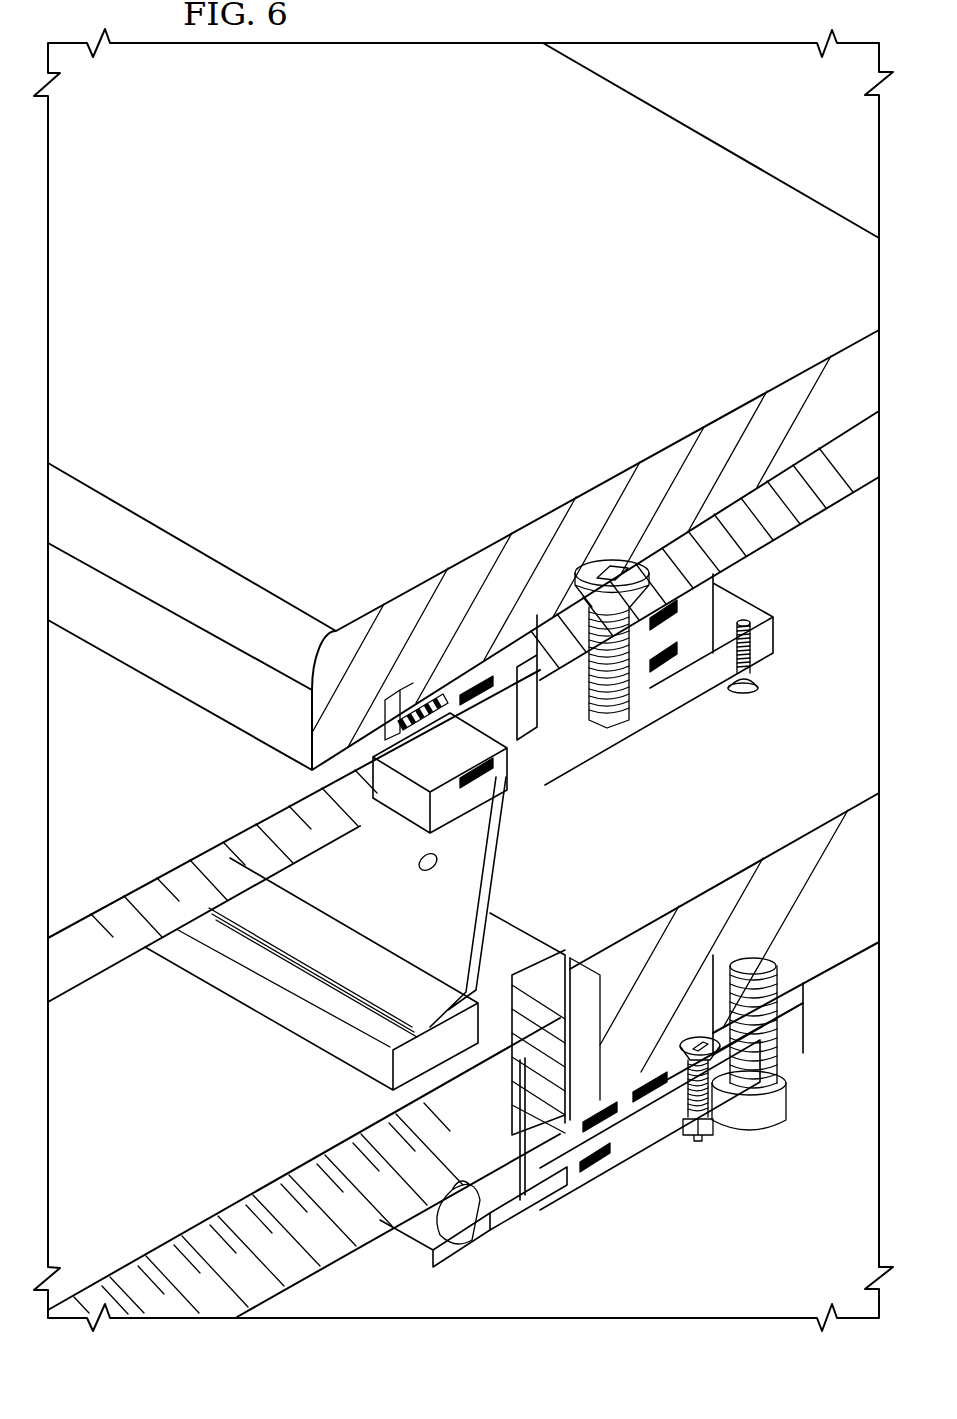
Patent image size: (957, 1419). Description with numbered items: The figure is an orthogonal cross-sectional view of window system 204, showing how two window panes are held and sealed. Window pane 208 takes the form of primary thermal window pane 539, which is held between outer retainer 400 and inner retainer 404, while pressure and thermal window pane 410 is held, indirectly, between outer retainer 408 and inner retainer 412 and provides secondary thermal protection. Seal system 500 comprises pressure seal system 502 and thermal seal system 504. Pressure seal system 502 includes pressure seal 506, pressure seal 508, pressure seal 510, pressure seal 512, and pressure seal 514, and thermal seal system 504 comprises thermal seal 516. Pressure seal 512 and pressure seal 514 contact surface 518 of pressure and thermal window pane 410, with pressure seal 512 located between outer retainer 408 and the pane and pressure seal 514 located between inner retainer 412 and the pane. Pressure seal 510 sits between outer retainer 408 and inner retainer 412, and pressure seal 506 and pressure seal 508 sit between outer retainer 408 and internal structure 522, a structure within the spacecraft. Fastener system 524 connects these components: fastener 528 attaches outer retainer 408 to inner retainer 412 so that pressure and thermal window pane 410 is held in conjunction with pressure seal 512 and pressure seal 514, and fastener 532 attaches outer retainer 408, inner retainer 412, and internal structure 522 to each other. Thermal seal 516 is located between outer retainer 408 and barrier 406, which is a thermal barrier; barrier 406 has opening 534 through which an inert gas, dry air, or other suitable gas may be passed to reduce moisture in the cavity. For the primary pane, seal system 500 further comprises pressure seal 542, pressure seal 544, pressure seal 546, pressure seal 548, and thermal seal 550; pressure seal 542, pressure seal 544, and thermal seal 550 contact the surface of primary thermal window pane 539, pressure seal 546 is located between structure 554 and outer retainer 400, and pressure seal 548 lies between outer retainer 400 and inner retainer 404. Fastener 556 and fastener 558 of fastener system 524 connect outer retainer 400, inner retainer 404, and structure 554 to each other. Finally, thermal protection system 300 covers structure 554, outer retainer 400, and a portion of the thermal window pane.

The window system 204 is at (799, 132).
The window pane 208 is at (103, 965).
The thermal protection system 300 is at (713, 150).
The outer retainer 400 is at (527, 625).
The inner retainer 404 is at (420, 818).
The barrier 406 is at (500, 850).
The outer retainer 408 is at (257, 1012).
The pressure and thermal window pane 410 is at (337, 1252).
The inner retainer 412 is at (507, 1217).
The seal system 500 is at (650, 1176).
The pressure seal system 502 is at (660, 1160).
The thermal seal system 504 is at (580, 876).
The pressure seal 506 is at (660, 1040).
The pressure seal 508 is at (600, 1050).
The pressure seal 510 is at (600, 1170).
The pressure seal 512 is at (303, 1047).
The pressure seal 514 is at (453, 1243).
The thermal seal 516 is at (248, 940).
The surface 518 is at (263, 1192).
The internal structure 522 is at (723, 888).
The fastener system 524 is at (759, 1096).
The fastener 528 is at (698, 1138).
The fastener 532 is at (778, 1122).
The opening 534 is at (420, 868).
The primary thermal window pane 539 is at (240, 835).
The pressure seal 542 is at (470, 672).
The pressure seal 544 is at (477, 790).
The pressure seal 546 is at (618, 572).
The pressure seal 548 is at (672, 650).
The thermal seal 550 is at (395, 698).
The structure 554 is at (823, 497).
The fastener 556 is at (760, 684).
The fastener 558 is at (665, 600).